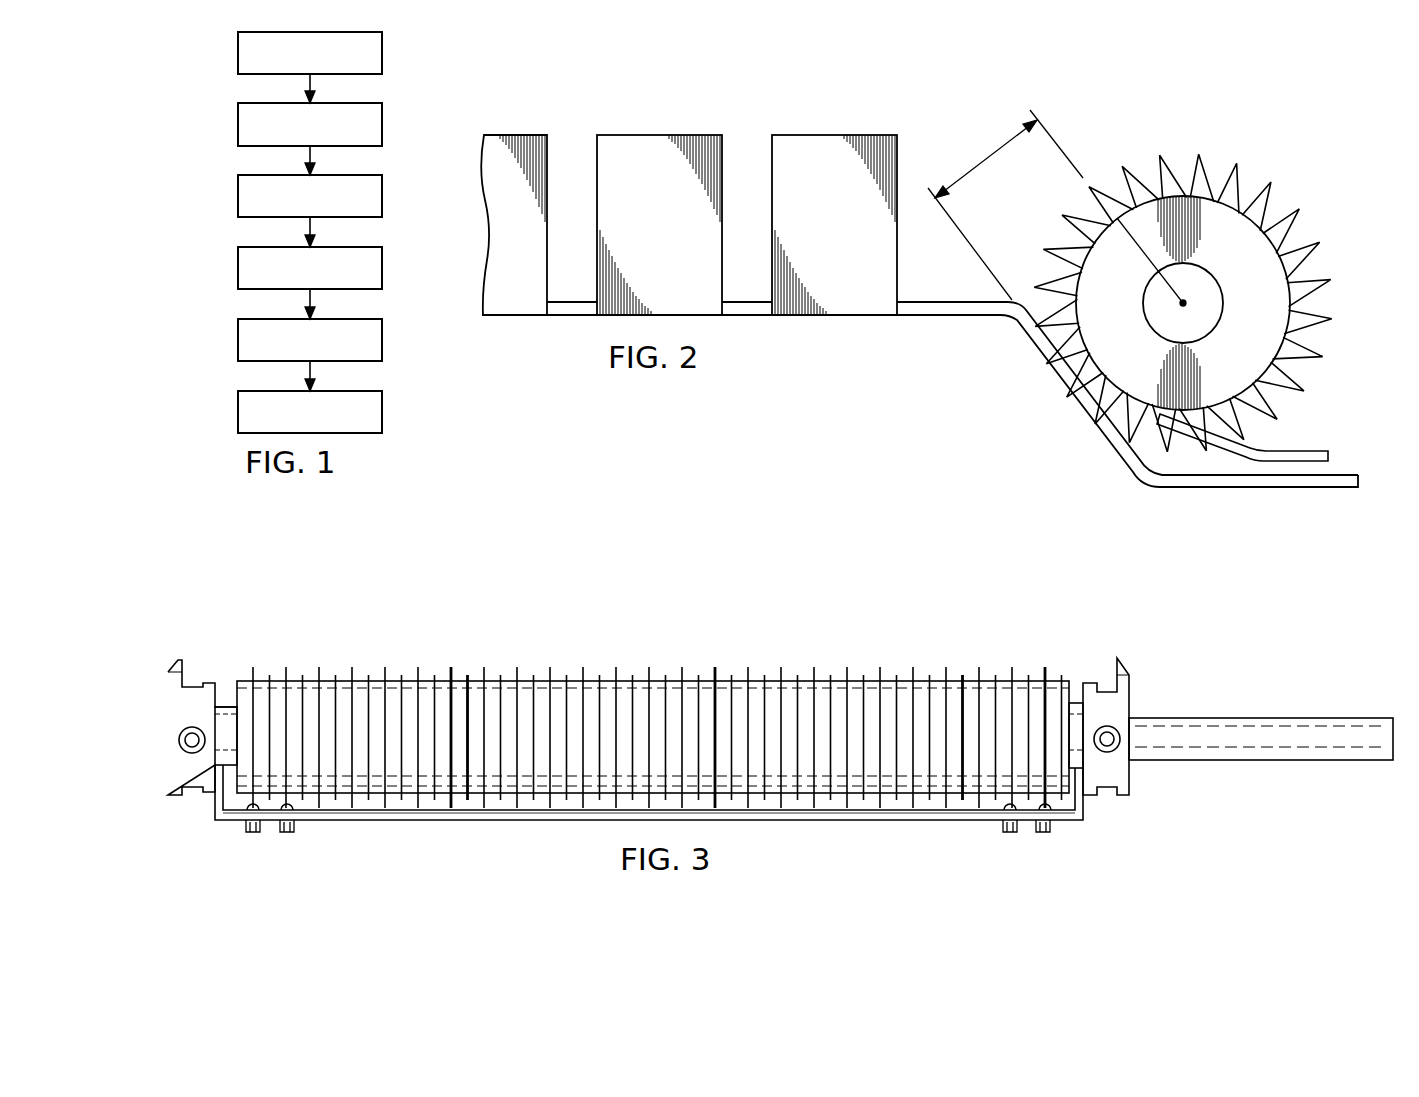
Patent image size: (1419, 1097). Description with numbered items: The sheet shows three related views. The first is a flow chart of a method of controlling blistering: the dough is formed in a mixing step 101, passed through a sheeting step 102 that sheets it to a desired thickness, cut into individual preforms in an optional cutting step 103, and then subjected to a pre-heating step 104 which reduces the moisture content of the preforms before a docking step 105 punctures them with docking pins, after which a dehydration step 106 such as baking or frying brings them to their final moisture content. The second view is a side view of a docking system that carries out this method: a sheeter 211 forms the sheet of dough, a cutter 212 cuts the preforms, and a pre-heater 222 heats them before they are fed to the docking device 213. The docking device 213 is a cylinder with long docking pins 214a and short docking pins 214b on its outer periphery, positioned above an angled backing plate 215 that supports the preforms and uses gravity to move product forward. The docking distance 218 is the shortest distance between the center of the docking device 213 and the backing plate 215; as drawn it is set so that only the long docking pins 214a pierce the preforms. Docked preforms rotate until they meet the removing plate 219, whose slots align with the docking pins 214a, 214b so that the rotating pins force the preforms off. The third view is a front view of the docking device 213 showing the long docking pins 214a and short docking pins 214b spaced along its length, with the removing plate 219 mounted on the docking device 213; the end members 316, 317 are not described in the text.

In FIG. 1, the mixing step 101 is at (238, 50).
In FIG. 1, the sheeting step 102 is at (238, 122).
In FIG. 1, the cutting step 103 is at (238, 194).
In FIG. 1, the pre-heating step 104 is at (238, 264).
In FIG. 1, the docking step 105 is at (238, 338).
In FIG. 1, the dehydration step 106 is at (238, 410).
In FIG. 2, the sheeter 211 is at (505, 135).
In FIG. 2, the cutter 212 is at (638, 135).
In FIG. 2, the pre-heater 222 is at (813, 135).
In FIG. 2, the docking device 213 is at (1230, 220).
In FIG. 3, the docking device 213 is at (615, 568).
In FIG. 2, the long docking pins 214a is at (1060, 243).
In FIG. 3, the long docking pins 214a is at (253, 672).
In FIG. 2, the short docking pins 214b is at (1140, 183).
In FIG. 3, the short docking pins 214b is at (270, 677).
In FIG. 2, the backing plate 215 is at (1127, 455).
In FIG. 2, the docking distance 218 is at (988, 156).
In FIG. 2, the removing plate 219 is at (1318, 452).
In FIG. 3, the removing plate 219 is at (460, 820).
In FIG. 3, the shaft / handle 316 is at (1365, 718).
In FIG. 3, the pin holder channel 317 is at (362, 681).